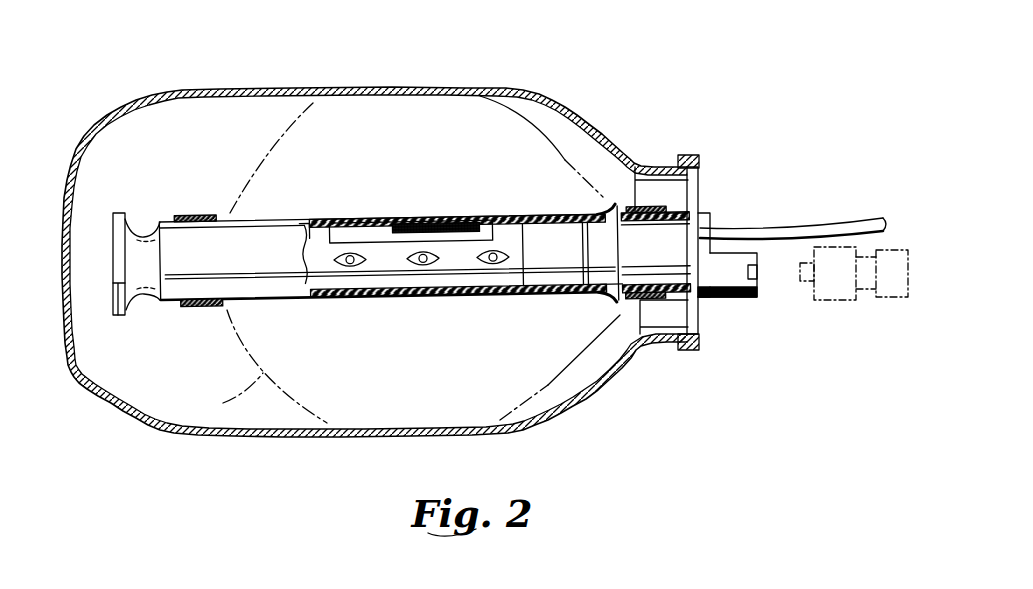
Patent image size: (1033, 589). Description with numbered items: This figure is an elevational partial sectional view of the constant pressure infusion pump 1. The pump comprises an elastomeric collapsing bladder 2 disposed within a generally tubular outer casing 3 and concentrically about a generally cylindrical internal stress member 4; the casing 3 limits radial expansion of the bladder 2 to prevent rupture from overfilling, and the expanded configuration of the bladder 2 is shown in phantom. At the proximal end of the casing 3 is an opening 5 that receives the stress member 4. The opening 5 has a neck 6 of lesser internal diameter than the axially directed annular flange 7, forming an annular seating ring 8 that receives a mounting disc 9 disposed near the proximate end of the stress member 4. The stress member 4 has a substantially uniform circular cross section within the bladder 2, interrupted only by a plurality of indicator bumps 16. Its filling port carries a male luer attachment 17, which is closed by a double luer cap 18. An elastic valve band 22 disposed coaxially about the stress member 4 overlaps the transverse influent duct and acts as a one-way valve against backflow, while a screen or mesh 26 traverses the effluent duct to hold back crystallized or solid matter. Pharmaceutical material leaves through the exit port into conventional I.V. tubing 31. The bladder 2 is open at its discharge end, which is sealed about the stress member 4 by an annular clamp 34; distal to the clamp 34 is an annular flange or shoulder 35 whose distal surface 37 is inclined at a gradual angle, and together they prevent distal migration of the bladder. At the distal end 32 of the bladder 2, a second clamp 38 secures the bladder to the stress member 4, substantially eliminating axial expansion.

The constant pressure infusion pump 1 is at (434, 72).
The elastomeric collapsing bladder 2 is at (368, 220).
The tubular outer casing 3 is at (218, 87).
The internal stress member 4 is at (393, 298).
The opening 5 is at (655, 180).
The neck 6 is at (655, 345).
The axially directed annular flange 7 is at (698, 350).
The annular seating ring 8 is at (705, 333).
The mounting disc 9 is at (693, 196).
The indicator bumps 16 is at (433, 265).
The male luer attachment 17 is at (738, 258).
The double luer cap 18 is at (843, 311).
The elastic valve band 22 is at (540, 280).
The screen or mesh 26 is at (462, 222).
The I.V. tubing 31 is at (843, 222).
The distal end of bladder 32 is at (132, 222).
The annular clamp 34 is at (662, 305).
The annular flange or shoulder 35 is at (598, 304).
The distal surface 37 is at (603, 210).
The second clamp 38 is at (200, 308).